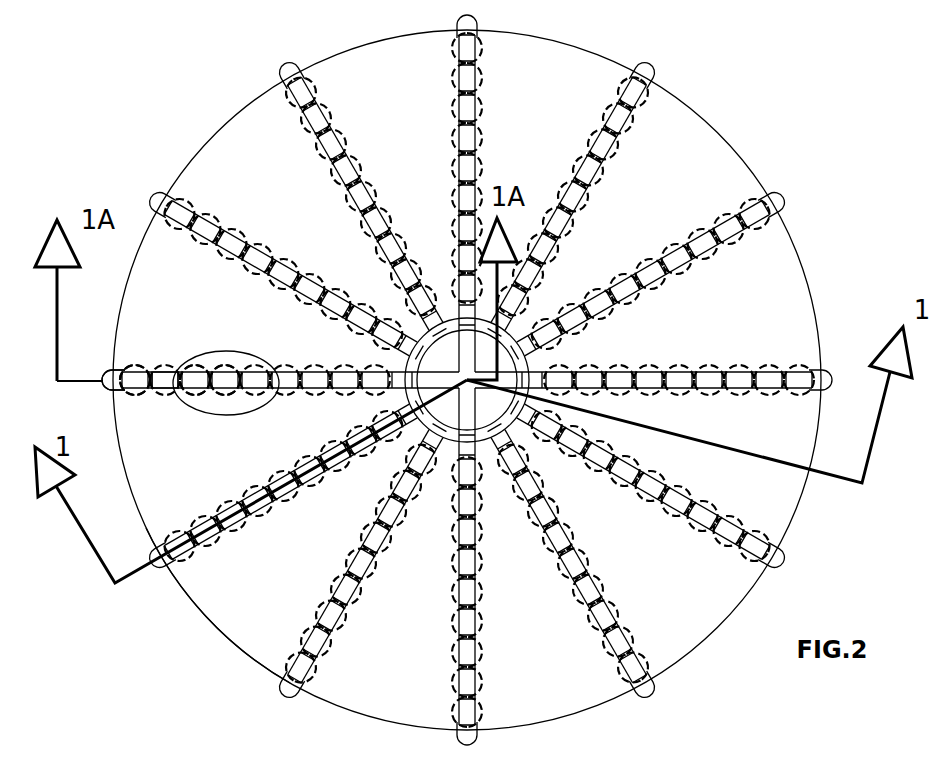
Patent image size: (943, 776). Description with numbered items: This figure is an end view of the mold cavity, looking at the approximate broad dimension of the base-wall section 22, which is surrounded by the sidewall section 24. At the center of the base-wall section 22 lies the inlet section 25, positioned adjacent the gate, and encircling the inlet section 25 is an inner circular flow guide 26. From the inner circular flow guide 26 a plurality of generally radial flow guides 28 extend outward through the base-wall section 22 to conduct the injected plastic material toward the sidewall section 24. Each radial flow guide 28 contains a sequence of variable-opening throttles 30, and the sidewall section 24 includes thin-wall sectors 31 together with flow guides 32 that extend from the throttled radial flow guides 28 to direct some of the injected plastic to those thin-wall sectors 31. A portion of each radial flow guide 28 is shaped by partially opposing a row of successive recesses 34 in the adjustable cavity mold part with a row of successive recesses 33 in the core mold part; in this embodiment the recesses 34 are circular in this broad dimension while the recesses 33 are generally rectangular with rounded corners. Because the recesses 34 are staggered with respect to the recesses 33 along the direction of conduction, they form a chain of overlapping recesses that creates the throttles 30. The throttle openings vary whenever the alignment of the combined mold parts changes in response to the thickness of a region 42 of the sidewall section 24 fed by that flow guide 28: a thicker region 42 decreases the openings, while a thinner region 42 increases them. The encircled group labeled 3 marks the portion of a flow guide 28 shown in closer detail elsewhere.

The pair of adjacent containers 3 is at (232, 416).
The base-wall section 22 is at (387, 154).
The sidewall section 24 is at (193, 140).
The inlet section 25 is at (467, 380).
The inner circular flow guide 26 is at (428, 420).
The radial flow guide 28 is at (248, 389).
The variable-opening throttle 30 is at (175, 395).
The thin-wall sector 31 is at (183, 594).
The sidewall-section flow guide 32 is at (103, 389).
The recess in core mold part 33 is at (152, 370).
The recess in adjustable cavity mold part 34 is at (170, 368).
The region of sidewall section 42 is at (103, 376).